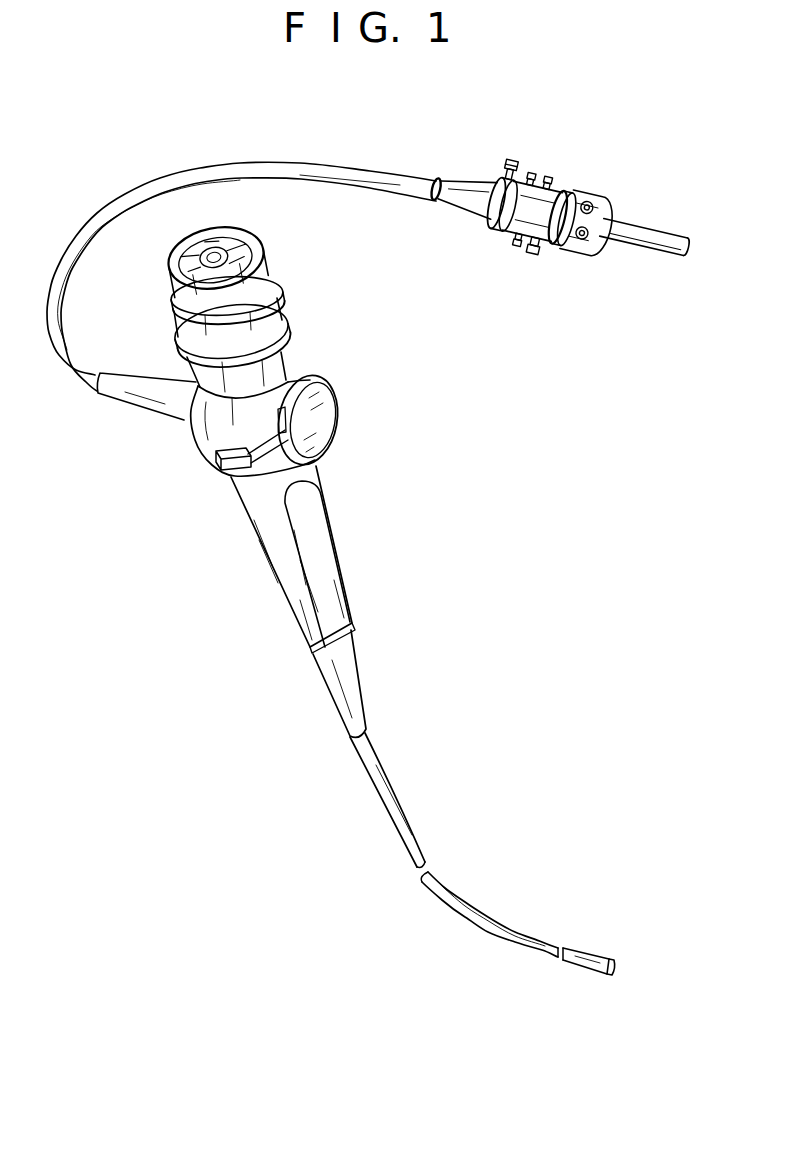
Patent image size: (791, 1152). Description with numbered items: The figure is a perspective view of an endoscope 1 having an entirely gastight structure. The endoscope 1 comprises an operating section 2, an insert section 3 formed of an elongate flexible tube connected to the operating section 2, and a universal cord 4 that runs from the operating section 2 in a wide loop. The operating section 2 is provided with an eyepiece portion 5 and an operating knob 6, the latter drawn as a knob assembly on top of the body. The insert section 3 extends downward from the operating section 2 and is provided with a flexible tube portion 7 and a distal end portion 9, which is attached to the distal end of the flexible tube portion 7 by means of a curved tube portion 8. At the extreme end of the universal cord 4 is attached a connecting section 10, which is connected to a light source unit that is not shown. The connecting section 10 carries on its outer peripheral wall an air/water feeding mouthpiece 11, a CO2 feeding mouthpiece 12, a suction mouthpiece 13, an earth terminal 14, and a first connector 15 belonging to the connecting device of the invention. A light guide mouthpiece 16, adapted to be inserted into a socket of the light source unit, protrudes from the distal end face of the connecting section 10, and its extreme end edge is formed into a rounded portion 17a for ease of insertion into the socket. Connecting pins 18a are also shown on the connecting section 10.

The endoscope 1 is at (377, 563).
The operating section 2 is at (300, 372).
The insert section 3 is at (510, 922).
The universal cord 4 is at (322, 167).
The eyepiece portion 5 is at (235, 240).
The operating knob 6 is at (222, 475).
The flexible tube portion 7 is at (405, 832).
The curved tube portion 8 is at (586, 967).
The distal end portion 9 is at (612, 958).
The connecting section 10 is at (560, 255).
The air/water feeding mouthpiece 11 is at (535, 258).
The CO2 feeding mouthpiece 12 is at (515, 247).
The suction mouthpiece 13 is at (533, 170).
The earth terminal 14 is at (550, 174).
The first connector 15 is at (499, 157).
The light guide mouthpiece 16 is at (640, 246).
The rounded portion 17a is at (683, 250).
The connecting pins 18a is at (590, 233).